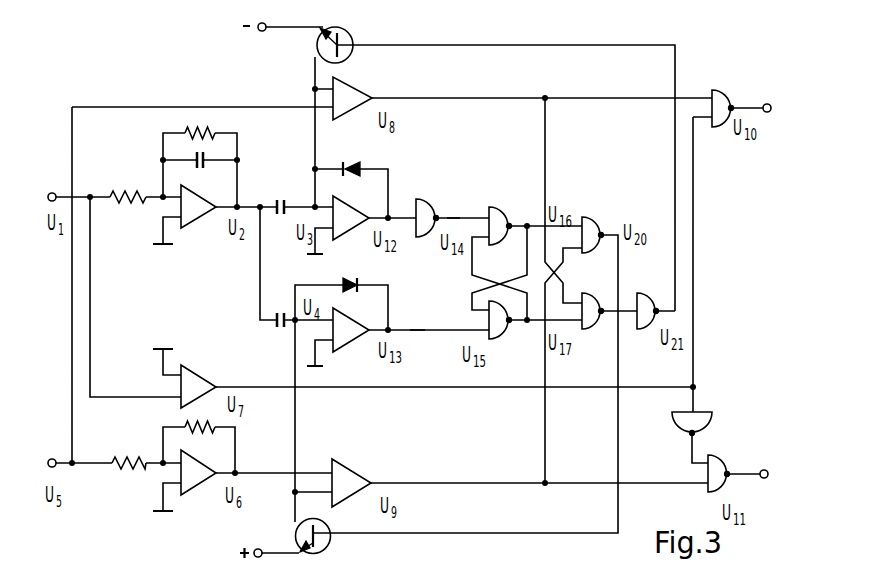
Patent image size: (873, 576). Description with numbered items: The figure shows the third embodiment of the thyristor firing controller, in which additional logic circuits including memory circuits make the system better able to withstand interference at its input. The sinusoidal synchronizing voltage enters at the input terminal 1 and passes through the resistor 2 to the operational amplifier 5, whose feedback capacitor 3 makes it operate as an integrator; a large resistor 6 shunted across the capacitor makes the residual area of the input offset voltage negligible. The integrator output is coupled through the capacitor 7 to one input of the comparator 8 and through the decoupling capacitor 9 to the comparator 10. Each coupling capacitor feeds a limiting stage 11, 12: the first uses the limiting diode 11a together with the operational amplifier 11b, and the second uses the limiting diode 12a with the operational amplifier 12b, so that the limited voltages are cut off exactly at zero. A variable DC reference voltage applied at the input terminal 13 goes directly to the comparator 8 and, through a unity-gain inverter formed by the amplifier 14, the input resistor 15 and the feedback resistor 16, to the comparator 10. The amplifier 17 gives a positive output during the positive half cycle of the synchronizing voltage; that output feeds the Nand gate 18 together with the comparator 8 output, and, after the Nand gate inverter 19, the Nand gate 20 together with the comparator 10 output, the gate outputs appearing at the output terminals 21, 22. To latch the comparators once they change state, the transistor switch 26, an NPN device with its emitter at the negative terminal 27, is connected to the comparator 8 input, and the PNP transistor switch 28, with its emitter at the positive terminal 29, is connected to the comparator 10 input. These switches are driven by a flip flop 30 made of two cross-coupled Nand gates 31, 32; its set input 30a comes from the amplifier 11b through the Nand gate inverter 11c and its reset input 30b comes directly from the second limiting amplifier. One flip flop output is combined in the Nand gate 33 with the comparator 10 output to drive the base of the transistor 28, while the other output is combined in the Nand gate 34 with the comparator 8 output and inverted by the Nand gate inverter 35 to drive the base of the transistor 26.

The input terminal 1 is at (56, 196).
The resistor 2 is at (127, 193).
The capacitor 3 is at (196, 157).
The operational amplifier 5 is at (208, 216).
The resistor 6 is at (212, 134).
The capacitor 7 is at (276, 199).
The comparator 8 is at (360, 114).
The decoupling capacitor 9 is at (275, 313).
The comparator 10 is at (346, 468).
The limiting stage 11 is at (362, 201).
The limiting diode 11a is at (354, 164).
The operational amplifier 11b is at (357, 232).
The Nand gate inverter 11c is at (428, 203).
The limiting stage 12 is at (366, 317).
The limiting diode 12a is at (357, 344).
The operational amplifier 12b is at (358, 284).
The input terminal 13 is at (55, 460).
The amplifier 14 is at (200, 489).
The input resistor 15 is at (133, 461).
The feedback resistor 16 is at (185, 425).
The amplifier 17 is at (198, 378).
The Nand gate 18 is at (723, 91).
The Nand gate inverter 19 is at (711, 418).
The Nand gate 20 is at (723, 461).
The output terminal 21 is at (771, 108).
The output terminal 22 is at (768, 474).
The switch 26 is at (353, 51).
The terminal 27 is at (262, 31).
The switch 28 is at (330, 550).
The terminal 29 is at (262, 545).
The flip flop 30 is at (467, 275).
The set input 30a is at (463, 216).
The reset input 30b is at (416, 328).
The Nand gate 31 is at (500, 207).
The Nand gate 32 is at (505, 337).
The Nand gate 33 is at (591, 220).
The Nand gate 34 is at (594, 329).
The Nand gate inverter 35 is at (647, 329).